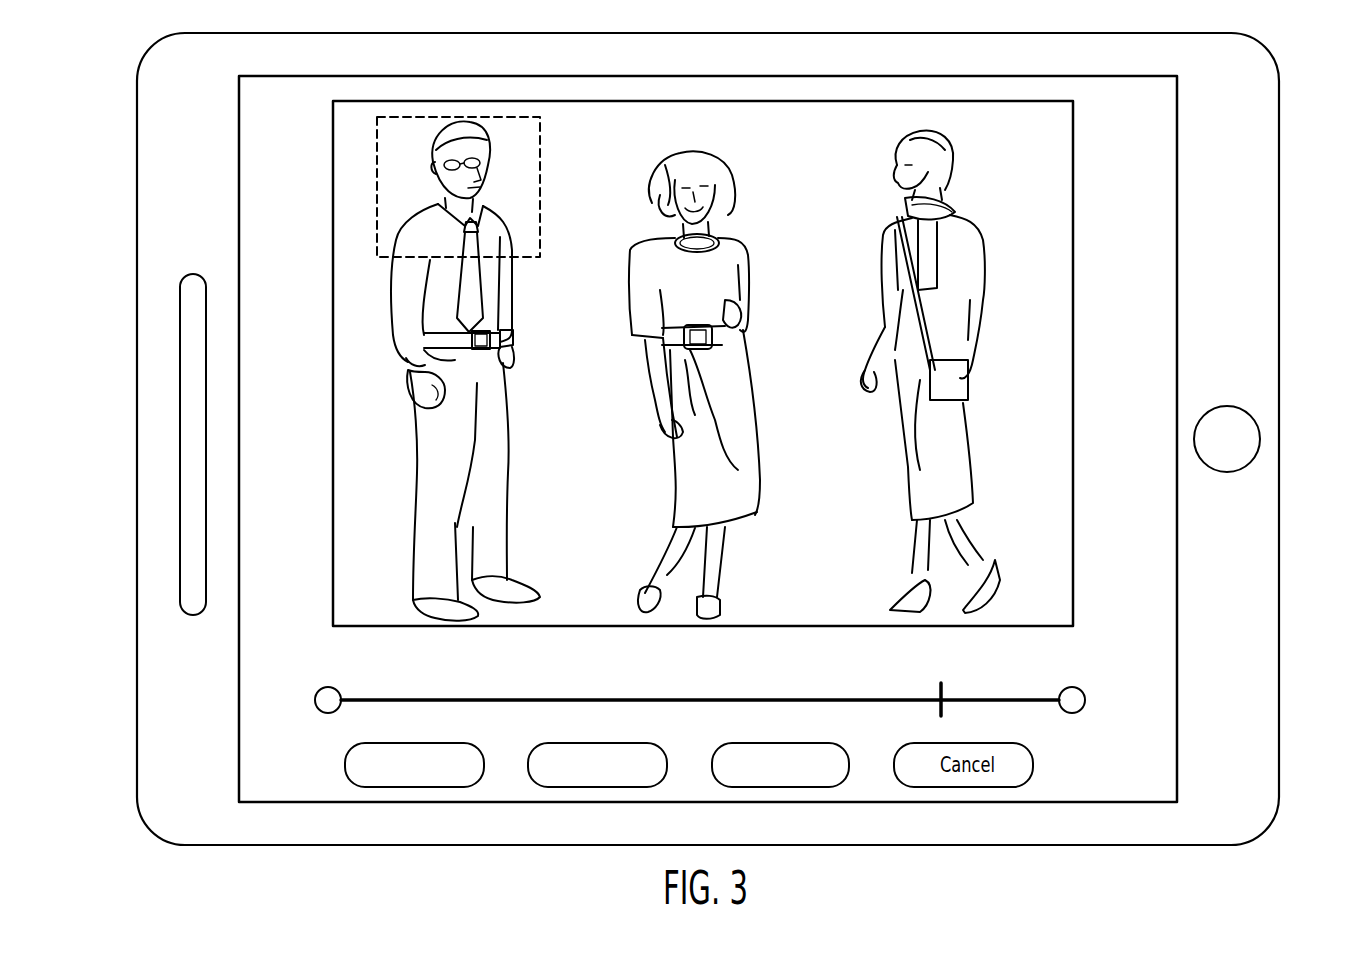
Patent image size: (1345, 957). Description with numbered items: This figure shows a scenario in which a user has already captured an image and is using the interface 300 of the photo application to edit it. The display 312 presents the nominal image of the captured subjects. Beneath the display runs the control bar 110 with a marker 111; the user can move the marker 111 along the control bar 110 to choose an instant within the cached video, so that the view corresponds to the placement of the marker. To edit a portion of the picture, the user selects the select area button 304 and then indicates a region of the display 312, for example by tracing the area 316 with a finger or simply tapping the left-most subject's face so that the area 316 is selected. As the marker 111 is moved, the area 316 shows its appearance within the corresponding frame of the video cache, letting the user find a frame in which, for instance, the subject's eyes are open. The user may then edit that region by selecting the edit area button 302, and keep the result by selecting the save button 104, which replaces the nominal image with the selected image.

The control bar 110 is at (1280, 170).
The interface 300 is at (1145, 133).
The display 312 is at (1074, 259).
The area 316 is at (541, 133).
The marker 111 is at (943, 693).
The select area button 304 is at (437, 745).
The edit area button 302 is at (620, 745).
The save button 104 is at (802, 745).